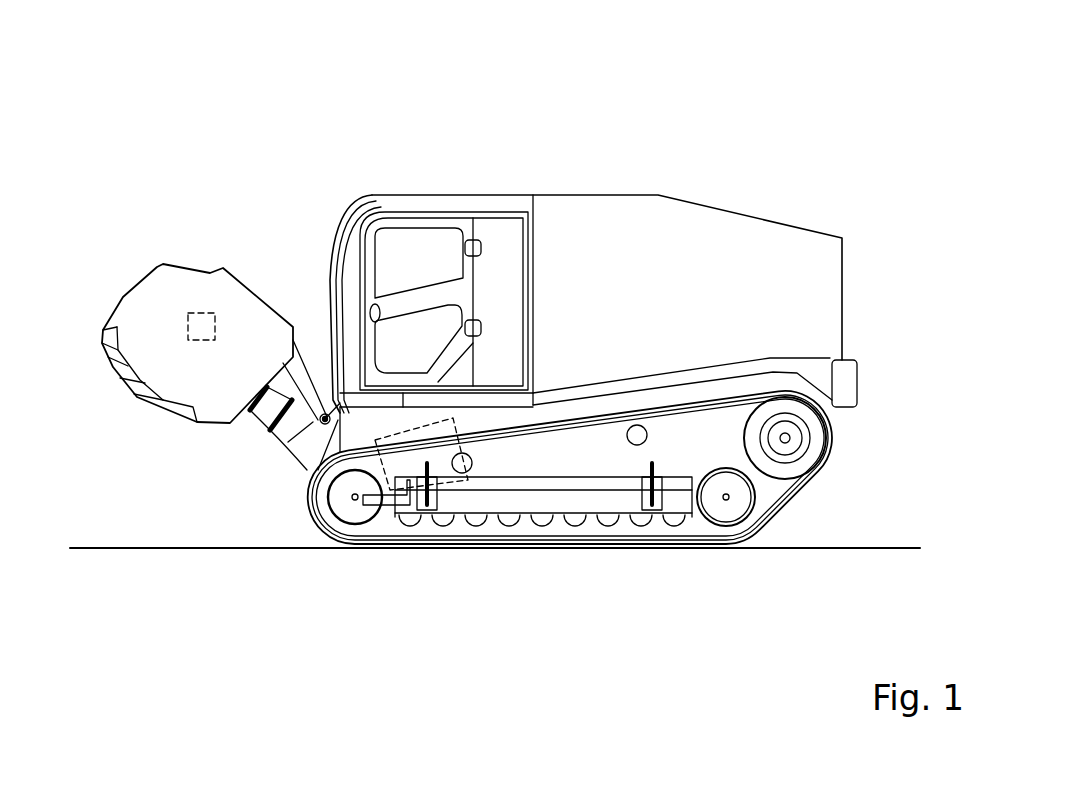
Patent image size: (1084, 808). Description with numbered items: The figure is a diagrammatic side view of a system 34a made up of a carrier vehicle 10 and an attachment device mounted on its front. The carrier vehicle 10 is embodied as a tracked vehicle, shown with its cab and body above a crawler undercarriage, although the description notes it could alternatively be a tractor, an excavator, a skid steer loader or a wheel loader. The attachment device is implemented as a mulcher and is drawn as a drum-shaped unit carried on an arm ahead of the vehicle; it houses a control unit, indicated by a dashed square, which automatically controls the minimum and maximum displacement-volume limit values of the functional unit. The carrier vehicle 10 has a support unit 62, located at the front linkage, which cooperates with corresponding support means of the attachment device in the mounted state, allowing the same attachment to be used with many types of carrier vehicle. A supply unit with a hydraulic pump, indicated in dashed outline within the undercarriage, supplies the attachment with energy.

The carrier vehicle 10 is at (136, 480).
The system 34a is at (290, 126).
The support unit 62 is at (277, 450).